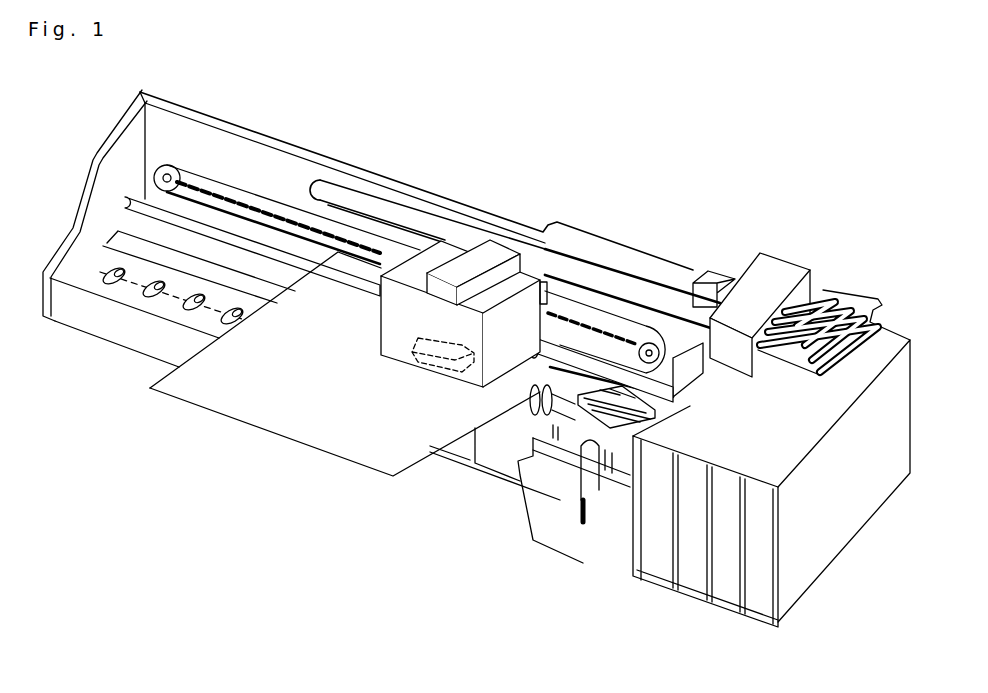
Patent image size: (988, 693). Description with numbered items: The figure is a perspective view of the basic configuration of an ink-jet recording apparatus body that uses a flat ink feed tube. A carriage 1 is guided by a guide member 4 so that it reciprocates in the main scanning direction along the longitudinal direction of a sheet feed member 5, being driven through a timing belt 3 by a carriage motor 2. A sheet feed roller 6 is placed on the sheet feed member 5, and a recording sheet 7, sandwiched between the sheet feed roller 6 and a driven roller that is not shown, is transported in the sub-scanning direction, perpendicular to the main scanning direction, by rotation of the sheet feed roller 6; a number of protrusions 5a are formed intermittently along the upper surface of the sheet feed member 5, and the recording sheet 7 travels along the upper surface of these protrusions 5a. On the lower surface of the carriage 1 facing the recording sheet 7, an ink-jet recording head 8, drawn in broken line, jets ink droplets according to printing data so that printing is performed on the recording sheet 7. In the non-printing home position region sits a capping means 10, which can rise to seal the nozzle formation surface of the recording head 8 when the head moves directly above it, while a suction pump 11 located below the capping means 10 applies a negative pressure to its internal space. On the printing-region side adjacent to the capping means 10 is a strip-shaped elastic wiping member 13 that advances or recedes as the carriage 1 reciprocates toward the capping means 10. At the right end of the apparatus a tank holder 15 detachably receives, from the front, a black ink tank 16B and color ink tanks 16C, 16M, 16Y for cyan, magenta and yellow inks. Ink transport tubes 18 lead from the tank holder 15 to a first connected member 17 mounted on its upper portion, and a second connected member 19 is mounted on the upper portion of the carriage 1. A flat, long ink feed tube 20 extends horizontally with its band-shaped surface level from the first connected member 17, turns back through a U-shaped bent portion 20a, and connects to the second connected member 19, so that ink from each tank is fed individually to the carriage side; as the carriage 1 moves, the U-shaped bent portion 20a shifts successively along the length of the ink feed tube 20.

The carriage 1 is at (387, 322).
The carriage motor 2 is at (653, 328).
The timing belt 3 is at (203, 180).
The guide member 4 is at (128, 196).
The sheet feed member 5 is at (163, 333).
The protrusions 5a is at (143, 279).
The sheet feed roller 6 is at (100, 250).
The recording sheet 7 is at (337, 445).
The ink-jet recording head 8 is at (441, 373).
The capping means 10 is at (653, 424).
The suction pump 11 is at (620, 468).
The wiping member 13 is at (572, 440).
The tank holder 15 is at (840, 537).
The black ink tank 16B is at (655, 567).
The cyan ink tank 16C is at (693, 573).
The magenta ink tank 16M is at (728, 587).
The yellow ink tank 16Y is at (757, 598).
The first connected member 17 is at (787, 270).
The ink transport tubes 18 is at (828, 293).
The second connected member 19 is at (465, 263).
The ink feed tube 20 is at (583, 277).
The U-shaped bent portion 20a is at (310, 185).